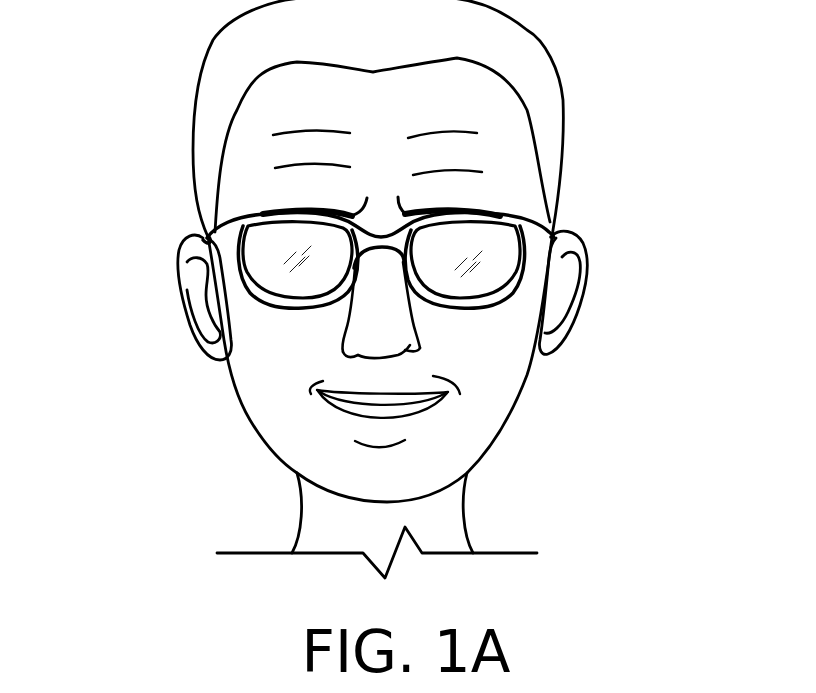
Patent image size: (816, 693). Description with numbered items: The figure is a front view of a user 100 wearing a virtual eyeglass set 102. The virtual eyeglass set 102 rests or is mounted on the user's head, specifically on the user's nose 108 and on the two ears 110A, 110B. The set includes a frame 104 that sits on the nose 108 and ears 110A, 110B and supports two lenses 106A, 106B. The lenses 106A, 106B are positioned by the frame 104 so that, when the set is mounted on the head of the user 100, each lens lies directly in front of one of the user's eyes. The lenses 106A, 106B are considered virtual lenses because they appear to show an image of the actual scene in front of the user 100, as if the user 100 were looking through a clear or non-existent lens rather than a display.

The user 100 is at (230, 410).
The virtual eyeglass set 102 is at (361, 195).
The frame 104 is at (535, 224).
The lens 106A is at (495, 277).
The lens 106B is at (280, 272).
The nose 108 is at (403, 338).
The ear 110A is at (582, 285).
The ear 110B is at (183, 278).